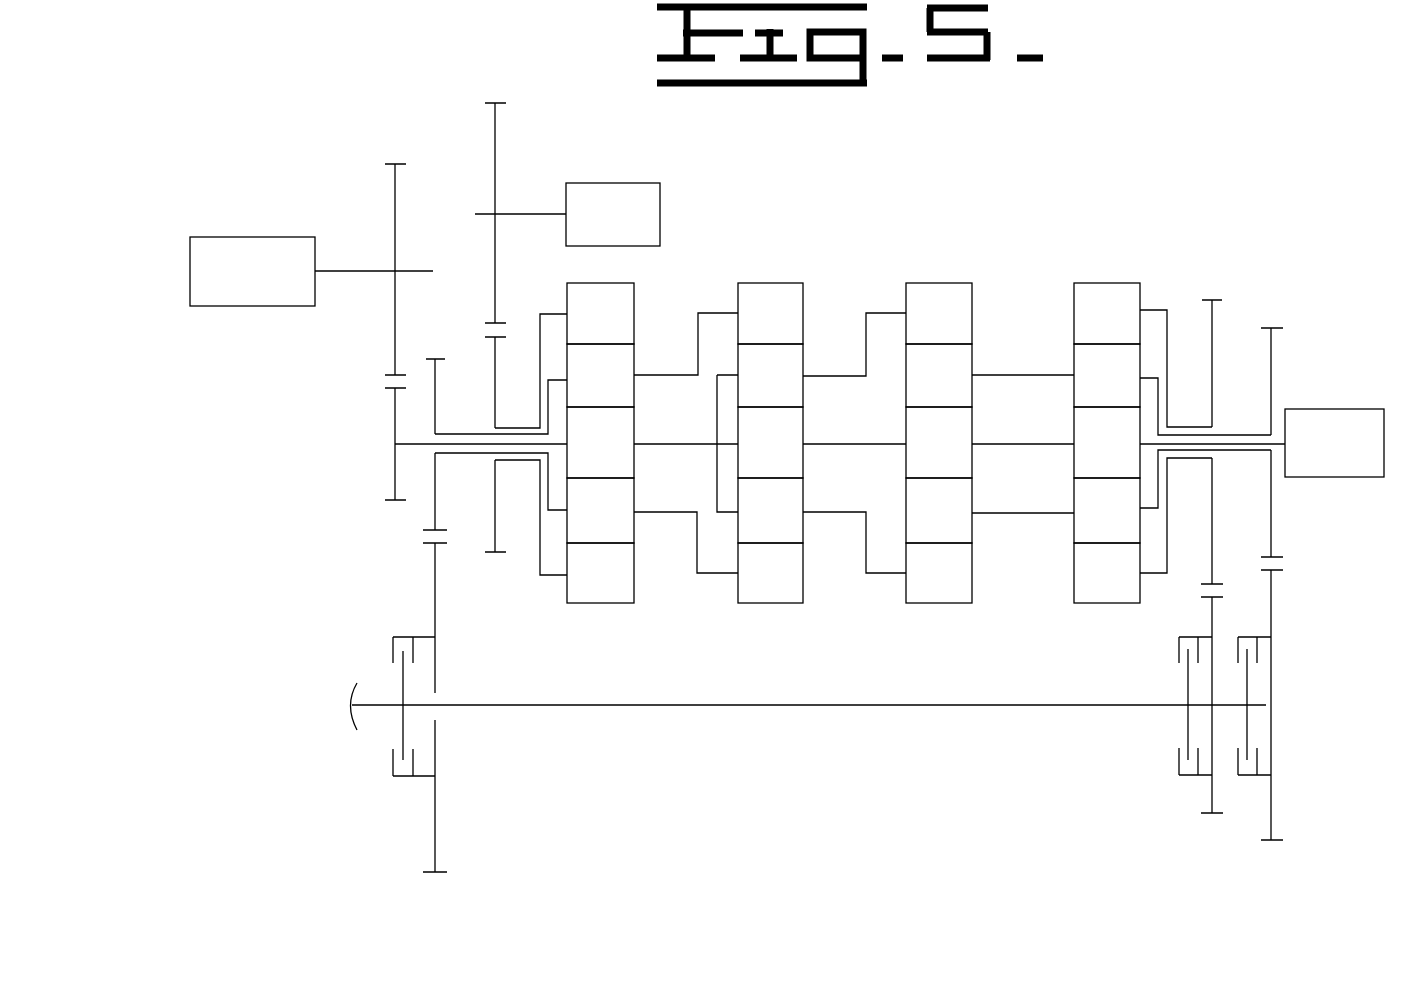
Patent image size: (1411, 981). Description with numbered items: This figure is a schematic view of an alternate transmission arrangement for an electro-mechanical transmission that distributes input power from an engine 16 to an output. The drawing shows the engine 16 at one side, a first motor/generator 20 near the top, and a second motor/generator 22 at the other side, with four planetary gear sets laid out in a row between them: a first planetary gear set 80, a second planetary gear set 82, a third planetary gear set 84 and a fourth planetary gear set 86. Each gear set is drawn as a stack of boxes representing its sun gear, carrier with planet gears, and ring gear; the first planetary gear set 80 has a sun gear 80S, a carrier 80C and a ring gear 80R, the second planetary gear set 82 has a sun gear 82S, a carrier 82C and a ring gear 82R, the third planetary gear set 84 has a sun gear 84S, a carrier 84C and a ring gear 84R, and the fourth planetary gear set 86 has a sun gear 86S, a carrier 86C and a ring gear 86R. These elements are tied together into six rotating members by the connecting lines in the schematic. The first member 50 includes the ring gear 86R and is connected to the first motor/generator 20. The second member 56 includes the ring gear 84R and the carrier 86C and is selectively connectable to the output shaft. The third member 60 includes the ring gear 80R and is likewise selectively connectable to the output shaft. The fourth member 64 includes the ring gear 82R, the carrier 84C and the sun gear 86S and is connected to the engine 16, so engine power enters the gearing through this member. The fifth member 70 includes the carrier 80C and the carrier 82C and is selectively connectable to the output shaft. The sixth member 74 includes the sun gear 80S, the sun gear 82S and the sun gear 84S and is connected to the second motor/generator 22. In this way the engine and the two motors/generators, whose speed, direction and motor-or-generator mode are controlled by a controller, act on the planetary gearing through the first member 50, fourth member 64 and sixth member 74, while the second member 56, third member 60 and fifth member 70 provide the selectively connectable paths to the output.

The engine 16 is at (270, 237).
The first motor/generator 20 is at (627, 183).
The second motor/generator 22 is at (1350, 409).
The first member 50 is at (570, 312).
The second member 56 is at (717, 312).
The third member 60 is at (1166, 310).
The fourth member 64 is at (418, 447).
The fifth member 70 is at (1259, 435).
The sixth member 74 is at (1272, 452).
The first planetary gear set 80 is at (1067, 490).
The sun gear 80S is at (1073, 430).
The carrier 80C is at (1073, 525).
The ring gear 80R is at (1073, 595).
The second planetary gear set 82 is at (980, 490).
The sun gear 82S is at (972, 458).
The carrier 82C is at (972, 530).
The ring gear 82R is at (972, 588).
The third planetary gear set 84 is at (810, 490).
The sun gear 84S is at (803, 435).
The carrier 84C is at (803, 497).
The ring gear 84R is at (803, 592).
The fourth planetary gear set 86 is at (641, 490).
The sun gear 86S is at (633, 435).
The carrier 86C is at (633, 500).
The ring gear 86R is at (633, 600).